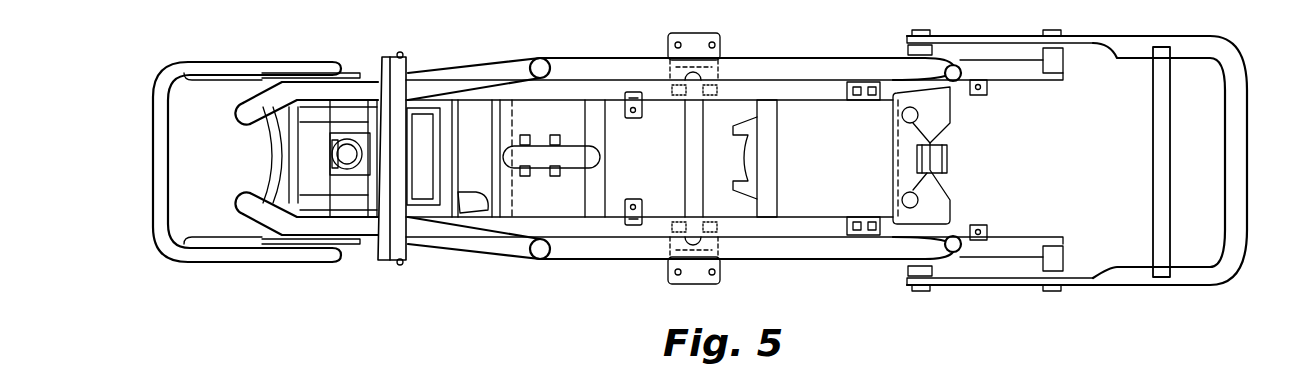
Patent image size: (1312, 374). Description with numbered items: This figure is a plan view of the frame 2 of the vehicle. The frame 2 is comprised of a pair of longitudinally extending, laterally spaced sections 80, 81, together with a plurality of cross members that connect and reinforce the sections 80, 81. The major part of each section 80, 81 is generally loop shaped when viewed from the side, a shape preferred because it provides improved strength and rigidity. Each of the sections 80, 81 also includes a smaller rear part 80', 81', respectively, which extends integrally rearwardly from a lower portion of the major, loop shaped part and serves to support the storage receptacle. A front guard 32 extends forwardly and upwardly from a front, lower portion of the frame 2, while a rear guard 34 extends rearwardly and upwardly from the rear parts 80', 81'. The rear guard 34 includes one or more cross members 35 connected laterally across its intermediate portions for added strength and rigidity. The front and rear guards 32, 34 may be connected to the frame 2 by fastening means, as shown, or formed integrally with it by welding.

The frame 2 is at (508, 279).
The front guard 32 is at (151, 163).
The rear guard 34 is at (1118, 40).
The cross member 35 is at (1172, 153).
The section 80 is at (598, 256).
The rear part 80' is at (978, 214).
The section 81 is at (598, 62).
The rear part 81' is at (998, 98).